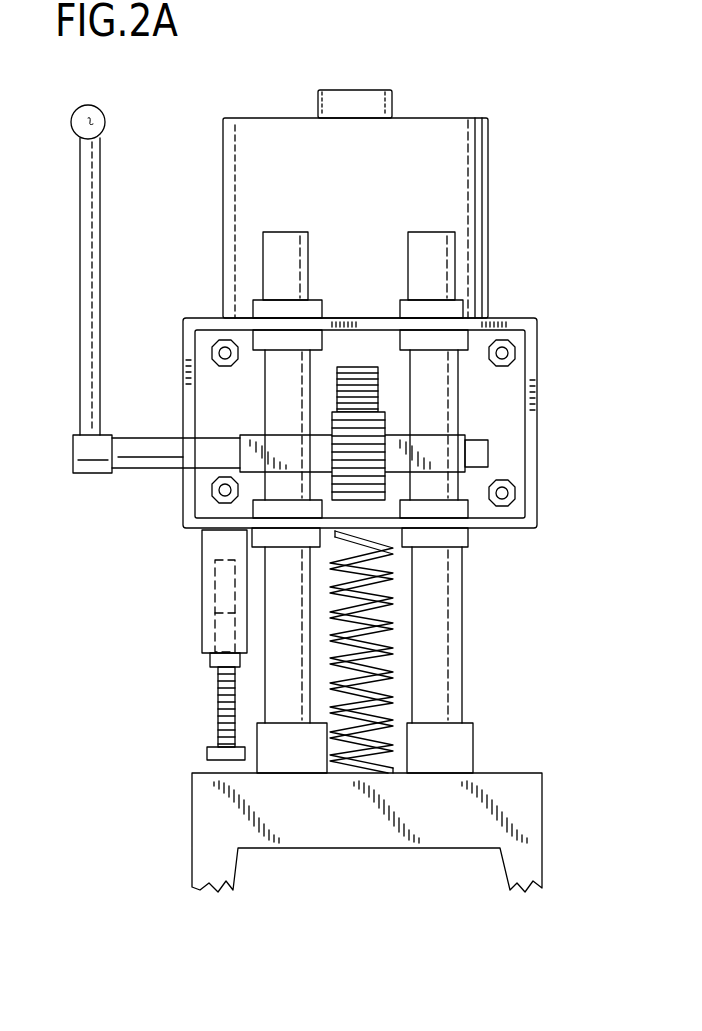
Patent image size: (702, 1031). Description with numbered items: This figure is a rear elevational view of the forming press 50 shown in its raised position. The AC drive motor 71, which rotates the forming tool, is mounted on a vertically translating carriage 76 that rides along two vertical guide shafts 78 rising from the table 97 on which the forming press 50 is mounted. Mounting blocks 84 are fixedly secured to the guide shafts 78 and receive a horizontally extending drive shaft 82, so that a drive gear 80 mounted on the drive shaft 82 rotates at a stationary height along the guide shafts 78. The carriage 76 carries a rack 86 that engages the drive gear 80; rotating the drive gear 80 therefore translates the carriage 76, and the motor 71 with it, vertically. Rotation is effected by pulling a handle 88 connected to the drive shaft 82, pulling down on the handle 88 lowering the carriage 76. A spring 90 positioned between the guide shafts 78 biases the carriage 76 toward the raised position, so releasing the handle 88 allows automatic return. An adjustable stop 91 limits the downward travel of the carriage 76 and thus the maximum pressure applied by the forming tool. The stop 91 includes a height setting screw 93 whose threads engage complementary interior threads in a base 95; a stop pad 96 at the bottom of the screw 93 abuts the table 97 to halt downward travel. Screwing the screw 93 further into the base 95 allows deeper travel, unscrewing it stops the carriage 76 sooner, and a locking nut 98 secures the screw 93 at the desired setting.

The forming press 50 is at (514, 246).
The AC drive motor 71 is at (455, 145).
The carriage 76 is at (540, 338).
The vertical guide shafts 78 is at (272, 565).
The drive gear 80 is at (372, 500).
The drive shaft 82 is at (140, 460).
The mounting blocks 84 is at (453, 440).
The rack 86 is at (365, 388).
The handle 88 is at (97, 232).
The spring 90 is at (387, 617).
The adjustable stop 91 is at (204, 616).
The height setting screw 93 is at (222, 708).
The base 95 is at (202, 585).
The stop pad 96 is at (210, 755).
The table 97 is at (192, 774).
The locking nut 98 is at (212, 662).